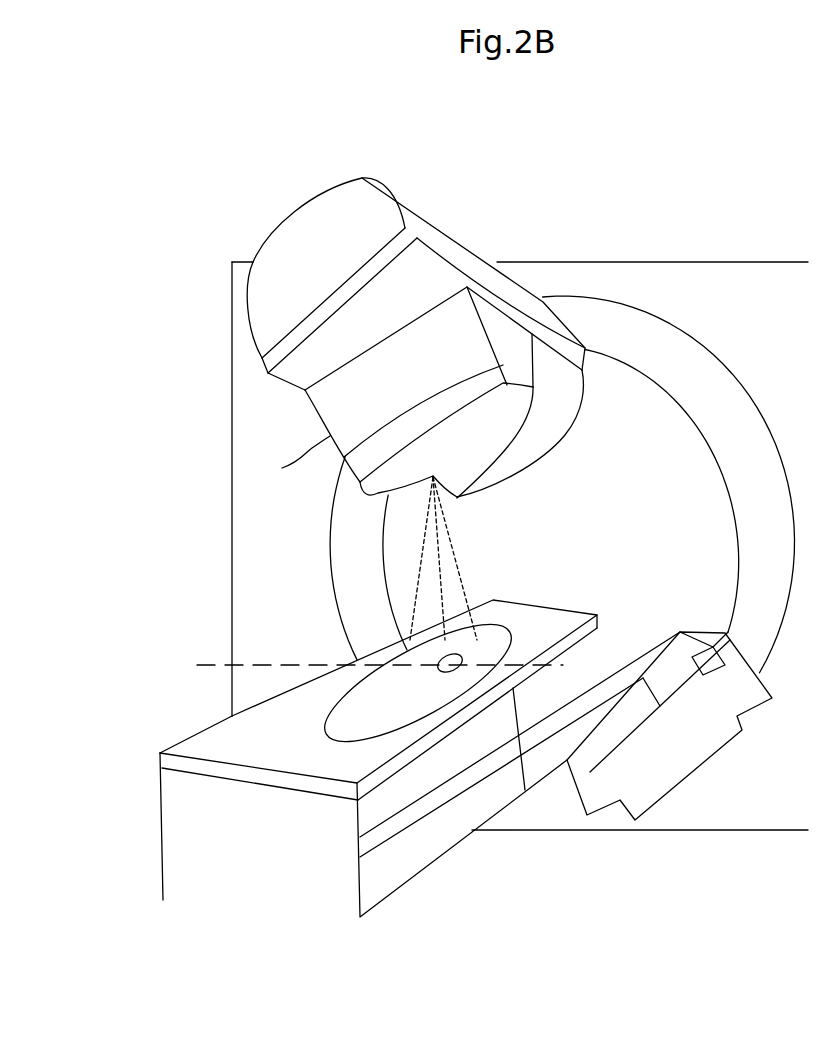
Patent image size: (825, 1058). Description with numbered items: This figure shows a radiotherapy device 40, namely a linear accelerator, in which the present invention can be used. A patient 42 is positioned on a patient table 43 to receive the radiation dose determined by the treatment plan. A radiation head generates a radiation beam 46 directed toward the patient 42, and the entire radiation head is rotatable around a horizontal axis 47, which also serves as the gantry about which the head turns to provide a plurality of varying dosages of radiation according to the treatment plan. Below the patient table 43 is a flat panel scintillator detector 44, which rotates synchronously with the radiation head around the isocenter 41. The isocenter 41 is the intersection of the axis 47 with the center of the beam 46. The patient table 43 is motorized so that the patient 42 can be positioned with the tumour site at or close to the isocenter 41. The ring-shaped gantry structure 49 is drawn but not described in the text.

The radiotherapy device 40 is at (703, 219).
The isocenter 41 is at (440, 671).
The patient 42 is at (362, 700).
The patient table 43 is at (567, 625).
The flat panel scintillator detector 44 is at (658, 648).
The radiation beam 46 is at (454, 570).
The horizontal axis 47 is at (218, 665).
The gantry ring 49 is at (719, 361).